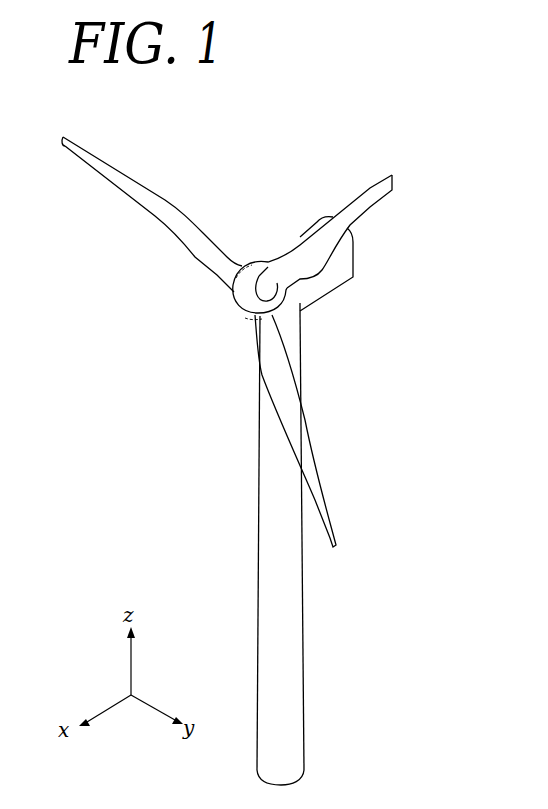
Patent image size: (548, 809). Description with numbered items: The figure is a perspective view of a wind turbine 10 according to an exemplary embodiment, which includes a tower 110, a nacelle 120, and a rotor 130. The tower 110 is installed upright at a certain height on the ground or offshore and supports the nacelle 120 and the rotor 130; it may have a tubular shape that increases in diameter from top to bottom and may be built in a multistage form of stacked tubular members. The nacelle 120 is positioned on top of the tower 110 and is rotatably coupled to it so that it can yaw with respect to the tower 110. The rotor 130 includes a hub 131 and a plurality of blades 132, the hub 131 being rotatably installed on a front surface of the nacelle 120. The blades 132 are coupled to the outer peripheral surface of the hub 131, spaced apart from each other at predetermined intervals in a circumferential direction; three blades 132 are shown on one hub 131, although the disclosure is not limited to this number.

The wind turbine 10 is at (282, 173).
The tower 110 is at (277, 593).
The nacelle 120 is at (338, 266).
The rotor 130 is at (233, 305).
The hub 131 is at (233, 314).
The blades 132 is at (173, 217).